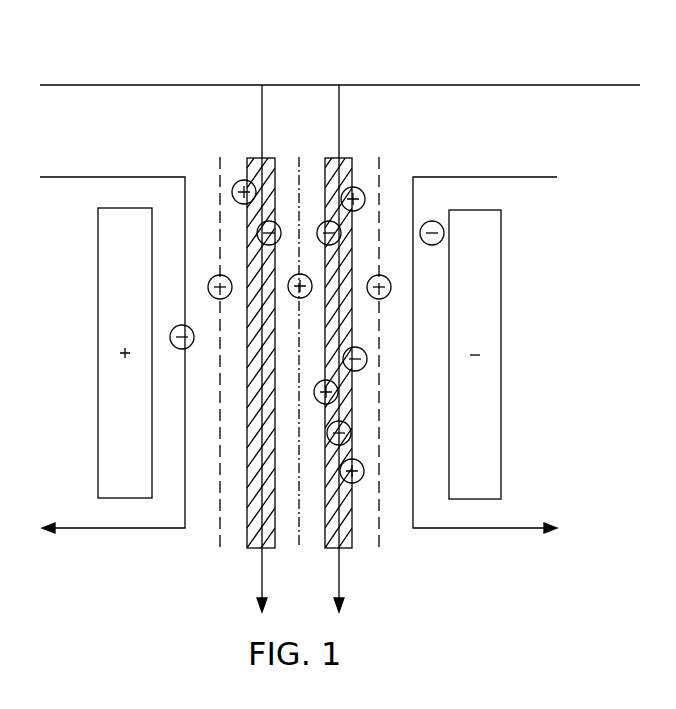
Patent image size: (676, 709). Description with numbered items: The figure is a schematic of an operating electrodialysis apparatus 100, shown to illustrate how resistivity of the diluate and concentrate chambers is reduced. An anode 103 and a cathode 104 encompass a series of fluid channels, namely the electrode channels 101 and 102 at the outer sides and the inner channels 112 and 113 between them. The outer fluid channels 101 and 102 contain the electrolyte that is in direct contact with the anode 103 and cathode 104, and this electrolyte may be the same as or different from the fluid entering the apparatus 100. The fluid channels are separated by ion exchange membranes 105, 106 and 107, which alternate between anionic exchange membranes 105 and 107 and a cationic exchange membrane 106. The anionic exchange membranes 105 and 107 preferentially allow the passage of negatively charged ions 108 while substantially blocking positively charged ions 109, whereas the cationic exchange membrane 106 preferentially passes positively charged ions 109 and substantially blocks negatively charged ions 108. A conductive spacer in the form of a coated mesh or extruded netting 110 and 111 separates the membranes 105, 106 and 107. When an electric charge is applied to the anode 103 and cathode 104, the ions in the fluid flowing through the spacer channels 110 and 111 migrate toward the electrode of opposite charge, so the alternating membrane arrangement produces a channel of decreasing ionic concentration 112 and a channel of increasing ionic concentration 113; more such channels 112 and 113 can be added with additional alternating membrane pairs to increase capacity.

The electrodialysis apparatus 100 is at (145, 85).
The fluid channel 101 is at (128, 177).
The fluid channel 102 is at (473, 178).
The anode 103 is at (98, 372).
The cathode 104 is at (502, 337).
The anionic exchange membrane 105 is at (218, 165).
The cationic exchange membrane 106 is at (299, 182).
The anionic exchange membrane 107 is at (381, 166).
The negatively charged ions 108 is at (170, 334).
The positively charged ions 109 is at (338, 392).
The coated mesh or extruded netting 110 is at (247, 541).
The coated mesh or extruded netting 111 is at (353, 530).
The channel of decreasing ionic concentration 112 is at (260, 588).
The channel of increasing ionic concentration 113 is at (341, 585).